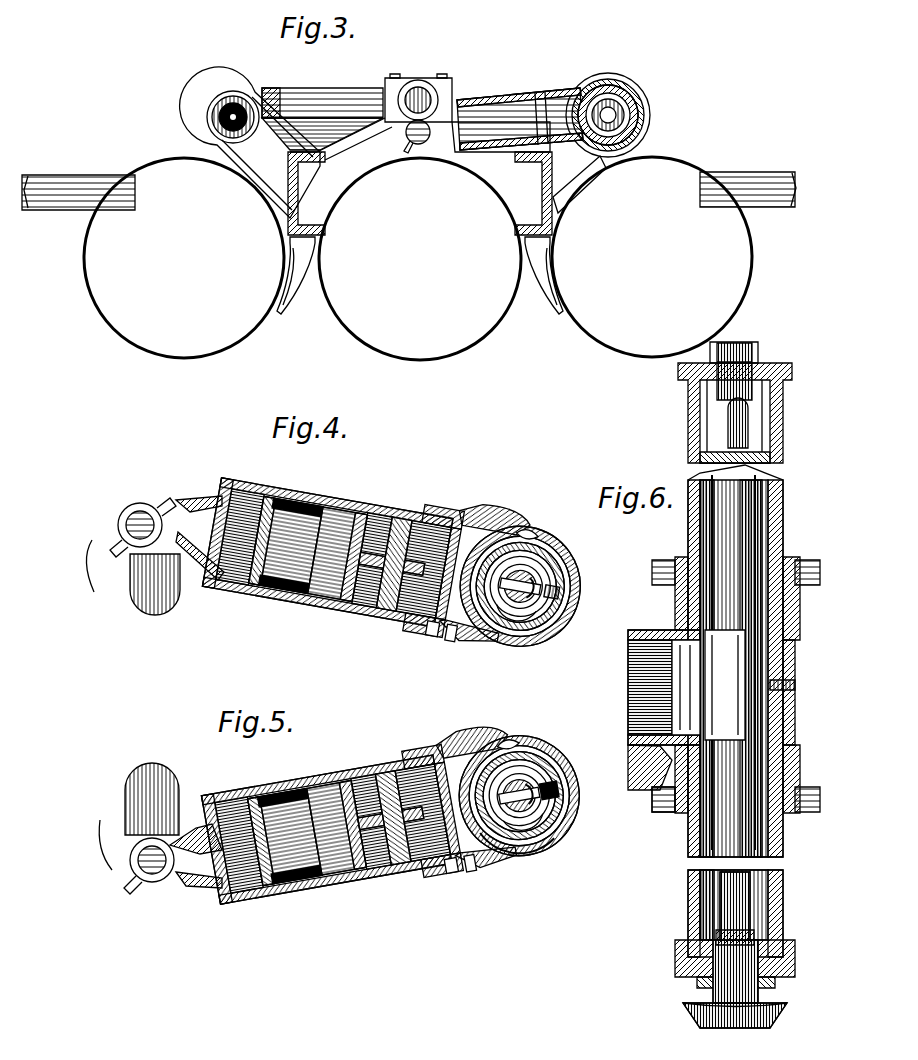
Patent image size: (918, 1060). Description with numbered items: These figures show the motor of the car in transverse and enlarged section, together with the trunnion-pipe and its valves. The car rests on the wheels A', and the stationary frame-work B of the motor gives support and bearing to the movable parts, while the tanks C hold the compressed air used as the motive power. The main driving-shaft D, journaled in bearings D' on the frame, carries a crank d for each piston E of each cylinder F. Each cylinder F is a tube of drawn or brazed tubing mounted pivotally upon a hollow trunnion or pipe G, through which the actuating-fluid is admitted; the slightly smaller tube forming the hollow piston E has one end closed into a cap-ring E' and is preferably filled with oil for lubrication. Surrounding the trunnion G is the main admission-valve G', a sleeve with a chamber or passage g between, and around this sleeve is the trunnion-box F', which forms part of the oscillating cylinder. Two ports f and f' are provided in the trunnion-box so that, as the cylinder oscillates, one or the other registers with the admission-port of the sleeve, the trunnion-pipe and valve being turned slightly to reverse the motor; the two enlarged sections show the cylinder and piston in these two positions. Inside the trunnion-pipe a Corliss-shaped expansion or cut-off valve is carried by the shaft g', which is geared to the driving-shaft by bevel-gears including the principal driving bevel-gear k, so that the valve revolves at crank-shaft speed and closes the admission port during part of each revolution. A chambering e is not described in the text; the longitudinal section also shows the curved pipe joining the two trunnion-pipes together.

In FIG. 3, the wheels A' is at (409, 177).
In FIG. 3, the stationary frame-work of the motor B is at (298, 180).
In FIG. 3, the tanks or reservoirs C is at (276, 222).
In FIG. 3, the main driving-shaft D is at (421, 75).
In FIG. 4, the main driving-shaft D is at (133, 592).
In FIG. 5, the main driving-shaft D is at (152, 786).
In FIG. 3, the bearings D' is at (418, 81).
In FIG. 3, the cranks d is at (428, 122).
In FIG. 4, the cranks d is at (118, 514).
In FIG. 5, the cranks d is at (150, 880).
In FIG. 3, the piston E is at (485, 125).
In FIG. 4, the piston E is at (286, 544).
In FIG. 5, the piston E is at (285, 836).
In FIG. 4, the cap-ring E' is at (338, 554).
In FIG. 5, the cap-ring E' is at (337, 828).
In FIG. 5, the stop e is at (584, 792).
In FIG. 6, the stop e is at (646, 799).
In FIG. 3, the cylinder F is at (377, 111).
In FIG. 4, the cylinder F is at (327, 543).
In FIG. 5, the cylinder F is at (326, 820).
In FIG. 3, the trunnion-box F' is at (624, 109).
In FIG. 4, the trunnion-box F' is at (536, 586).
In FIG. 5, the trunnion-box F' is at (535, 796).
In FIG. 6, the trunnion-box F' is at (647, 767).
In FIG. 4, the port f is at (399, 563).
In FIG. 5, the port f is at (402, 818).
In FIG. 4, the port f' is at (412, 564).
In FIG. 5, the port f' is at (414, 818).
In FIG. 3, the hollow trunnion or pipe G is at (415, 142).
In FIG. 4, the hollow trunnion or pipe G is at (521, 584).
In FIG. 5, the hollow trunnion or pipe G is at (519, 795).
In FIG. 6, the hollow trunnion or pipe G is at (721, 683).
In FIG. 4, the main admission-valve G' is at (468, 641).
In FIG. 5, the main admission-valve G' is at (486, 857).
In FIG. 6, the main admission-valve G' is at (670, 687).
In FIG. 4, the chamber or passage g is at (505, 635).
In FIG. 5, the chamber or passage g is at (524, 856).
In FIG. 6, the chamber or passage g is at (735, 908).
In FIG. 4, the shaft g' is at (536, 624).
In FIG. 5, the shaft g' is at (560, 757).
In FIG. 6, the shaft g' is at (766, 454).
In FIG. 6, the bevel-gear k is at (684, 1008).